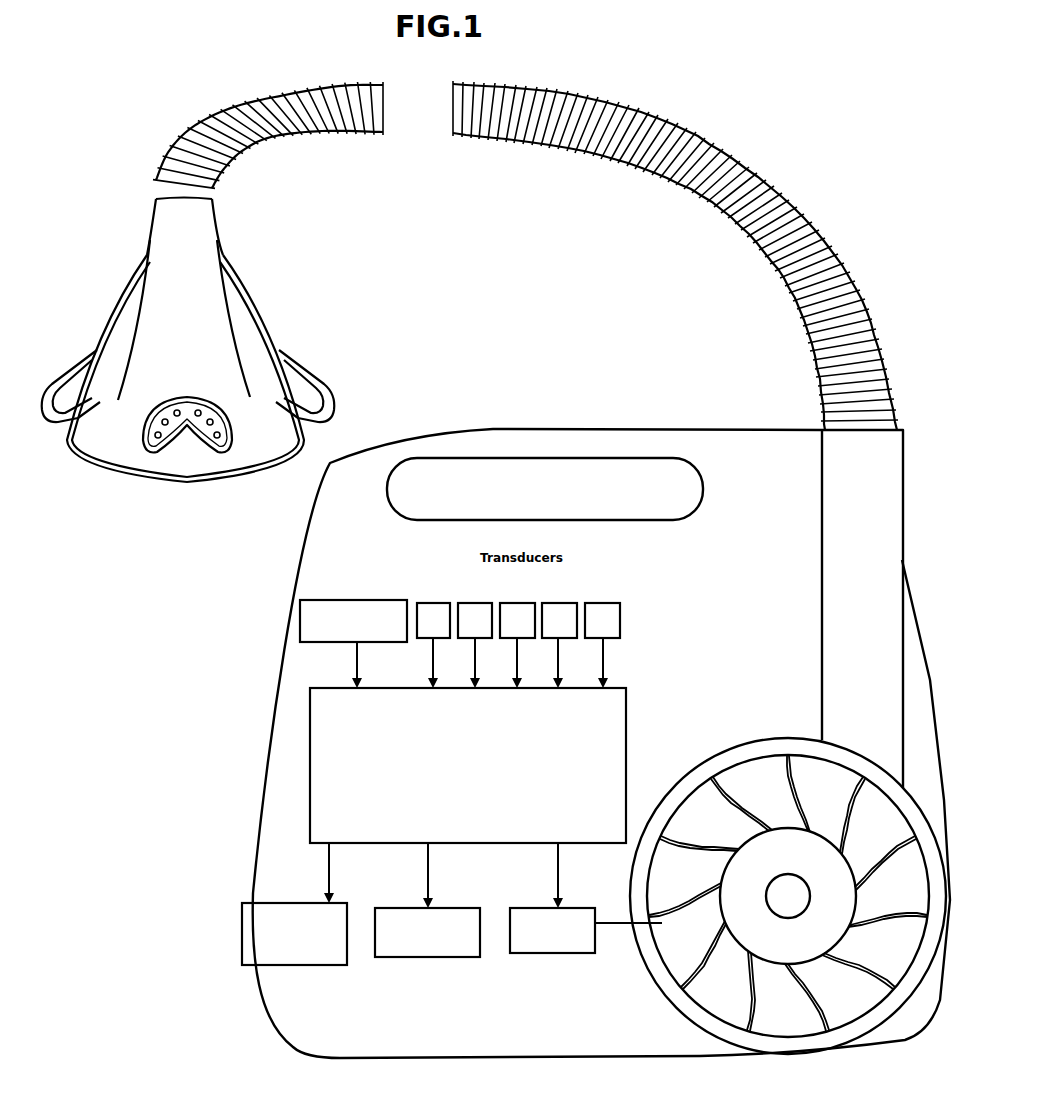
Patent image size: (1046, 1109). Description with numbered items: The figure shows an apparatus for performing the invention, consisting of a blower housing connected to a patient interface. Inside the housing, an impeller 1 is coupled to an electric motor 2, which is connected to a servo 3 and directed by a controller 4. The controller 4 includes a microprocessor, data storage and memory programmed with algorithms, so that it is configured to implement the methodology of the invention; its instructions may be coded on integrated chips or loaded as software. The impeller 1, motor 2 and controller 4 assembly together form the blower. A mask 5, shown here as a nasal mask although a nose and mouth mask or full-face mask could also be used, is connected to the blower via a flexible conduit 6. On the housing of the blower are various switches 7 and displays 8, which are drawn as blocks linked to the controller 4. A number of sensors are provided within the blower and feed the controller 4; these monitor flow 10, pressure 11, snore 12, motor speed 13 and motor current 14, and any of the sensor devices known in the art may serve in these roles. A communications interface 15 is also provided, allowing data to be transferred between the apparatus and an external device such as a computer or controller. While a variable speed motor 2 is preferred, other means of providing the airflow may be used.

The impeller 1 is at (865, 980).
The electric motor 2 is at (783, 833).
The servo 3 is at (586, 930).
The controller 4 is at (468, 765).
The mask 5 is at (188, 359).
The flexible conduit 6 is at (526, 255).
The switches 7 is at (353, 621).
The displays 8 is at (427, 932).
The flow sensor 10 is at (433, 610).
The pressure sensor 11 is at (475, 610).
The snore sensor 12 is at (517, 610).
The motor speed sensor 13 is at (559, 610).
The motor current sensor 14 is at (602, 610).
The communications interface 15 is at (294, 934).